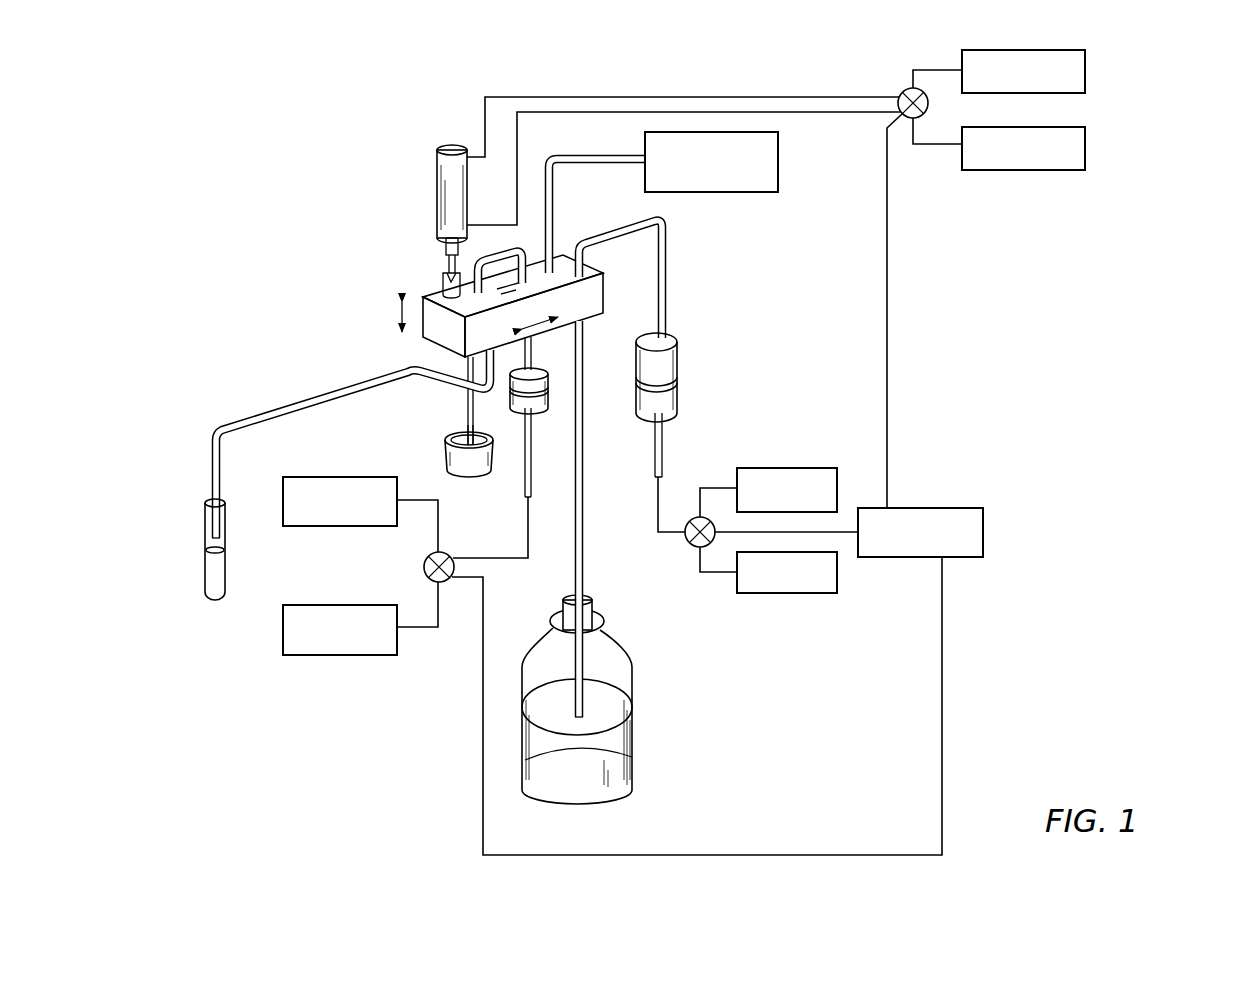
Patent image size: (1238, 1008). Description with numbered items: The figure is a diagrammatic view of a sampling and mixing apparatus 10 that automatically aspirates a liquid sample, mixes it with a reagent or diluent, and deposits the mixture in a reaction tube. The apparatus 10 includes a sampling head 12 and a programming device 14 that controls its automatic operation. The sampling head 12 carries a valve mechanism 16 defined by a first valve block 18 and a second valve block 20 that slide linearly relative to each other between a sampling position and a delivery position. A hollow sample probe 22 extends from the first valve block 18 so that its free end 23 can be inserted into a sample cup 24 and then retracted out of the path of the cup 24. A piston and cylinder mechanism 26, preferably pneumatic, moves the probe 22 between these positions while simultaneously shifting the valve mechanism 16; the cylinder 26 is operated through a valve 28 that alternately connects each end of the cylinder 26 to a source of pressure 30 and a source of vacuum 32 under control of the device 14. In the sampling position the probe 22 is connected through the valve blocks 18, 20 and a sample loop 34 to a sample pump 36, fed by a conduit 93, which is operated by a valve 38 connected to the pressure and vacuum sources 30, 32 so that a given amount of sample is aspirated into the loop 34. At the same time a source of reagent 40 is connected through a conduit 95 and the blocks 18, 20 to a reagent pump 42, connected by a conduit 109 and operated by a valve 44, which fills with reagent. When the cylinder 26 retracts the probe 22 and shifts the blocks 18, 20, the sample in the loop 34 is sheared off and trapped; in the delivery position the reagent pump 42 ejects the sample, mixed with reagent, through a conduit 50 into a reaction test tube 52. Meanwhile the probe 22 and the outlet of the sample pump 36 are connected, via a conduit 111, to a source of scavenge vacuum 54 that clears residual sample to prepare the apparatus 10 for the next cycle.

The sampling and mixing apparatus 10 is at (970, 455).
The sampling head 12 is at (381, 337).
The programming device 14 is at (975, 543).
The valve mechanism 16 is at (567, 242).
The first valve block 18 is at (592, 305).
The second valve block 20 is at (605, 282).
The sample probe 22 is at (466, 420).
The free end of the probe 23 is at (472, 430).
The sample cup 24 is at (468, 468).
The piston and cylinder mechanism 26 is at (445, 206).
The valve 28 is at (900, 92).
The source of pressure 30 is at (1085, 150).
The source of vacuum 32 is at (1085, 70).
The sample loop 34 is at (502, 241).
The sample pump 36 is at (548, 390).
The valve 38 is at (423, 565).
The source of reagent 40 is at (610, 768).
The reagent pump 42 is at (662, 393).
The valve 44 is at (698, 518).
The conduit 50 is at (275, 412).
The reaction test tube 52 is at (213, 585).
The source of scavenge vacuum 54 is at (778, 167).
The conduit 93 is at (532, 350).
The conduit 95 is at (582, 525).
The conduit 109 is at (666, 226).
The conduit 111 is at (545, 198).